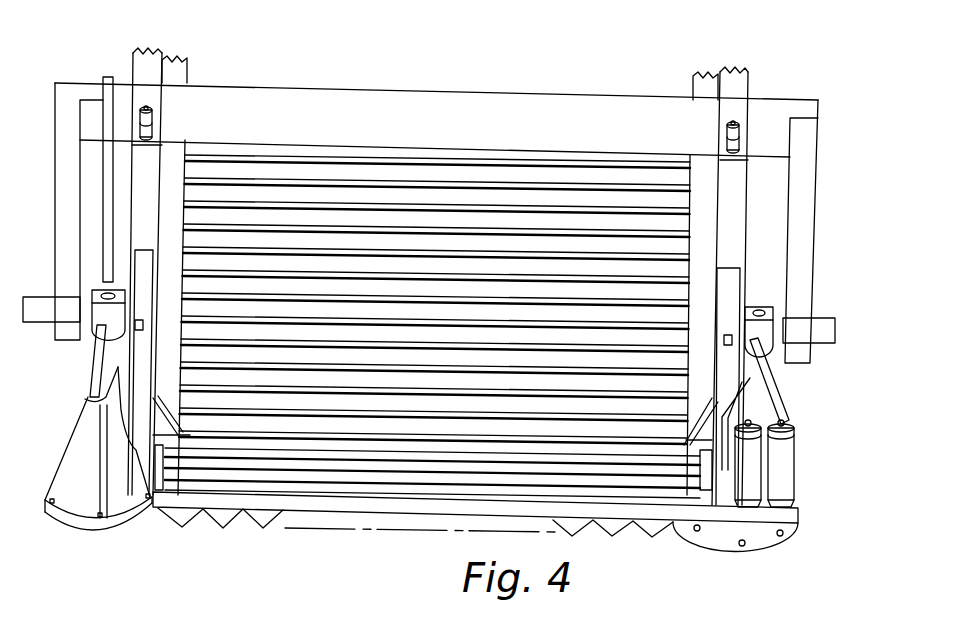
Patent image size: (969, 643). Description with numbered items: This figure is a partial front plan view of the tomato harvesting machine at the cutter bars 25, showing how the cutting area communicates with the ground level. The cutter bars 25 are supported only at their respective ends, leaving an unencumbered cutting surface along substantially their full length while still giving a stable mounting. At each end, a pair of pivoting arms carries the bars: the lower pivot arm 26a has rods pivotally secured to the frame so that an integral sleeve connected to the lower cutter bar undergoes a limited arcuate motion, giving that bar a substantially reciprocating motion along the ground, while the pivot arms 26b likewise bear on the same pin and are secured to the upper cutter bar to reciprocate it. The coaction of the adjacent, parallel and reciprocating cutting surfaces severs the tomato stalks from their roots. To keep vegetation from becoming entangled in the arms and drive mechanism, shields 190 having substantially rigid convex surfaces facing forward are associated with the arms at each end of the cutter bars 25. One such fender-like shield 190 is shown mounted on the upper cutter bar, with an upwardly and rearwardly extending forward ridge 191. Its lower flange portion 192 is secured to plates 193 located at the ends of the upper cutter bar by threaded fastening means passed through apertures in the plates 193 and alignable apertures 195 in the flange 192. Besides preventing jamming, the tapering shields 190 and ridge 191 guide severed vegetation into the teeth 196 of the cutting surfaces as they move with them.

The cutter bars 25 is at (383, 507).
The lower pivot arm 26a is at (776, 386).
The pivot arms 26b is at (745, 408).
The shields 190 is at (62, 465).
The forward ridge 191 is at (97, 433).
The lower flange portion 192 is at (66, 512).
The plates 193 is at (762, 540).
The apertures 195 is at (100, 515).
The teeth 196 is at (242, 512).